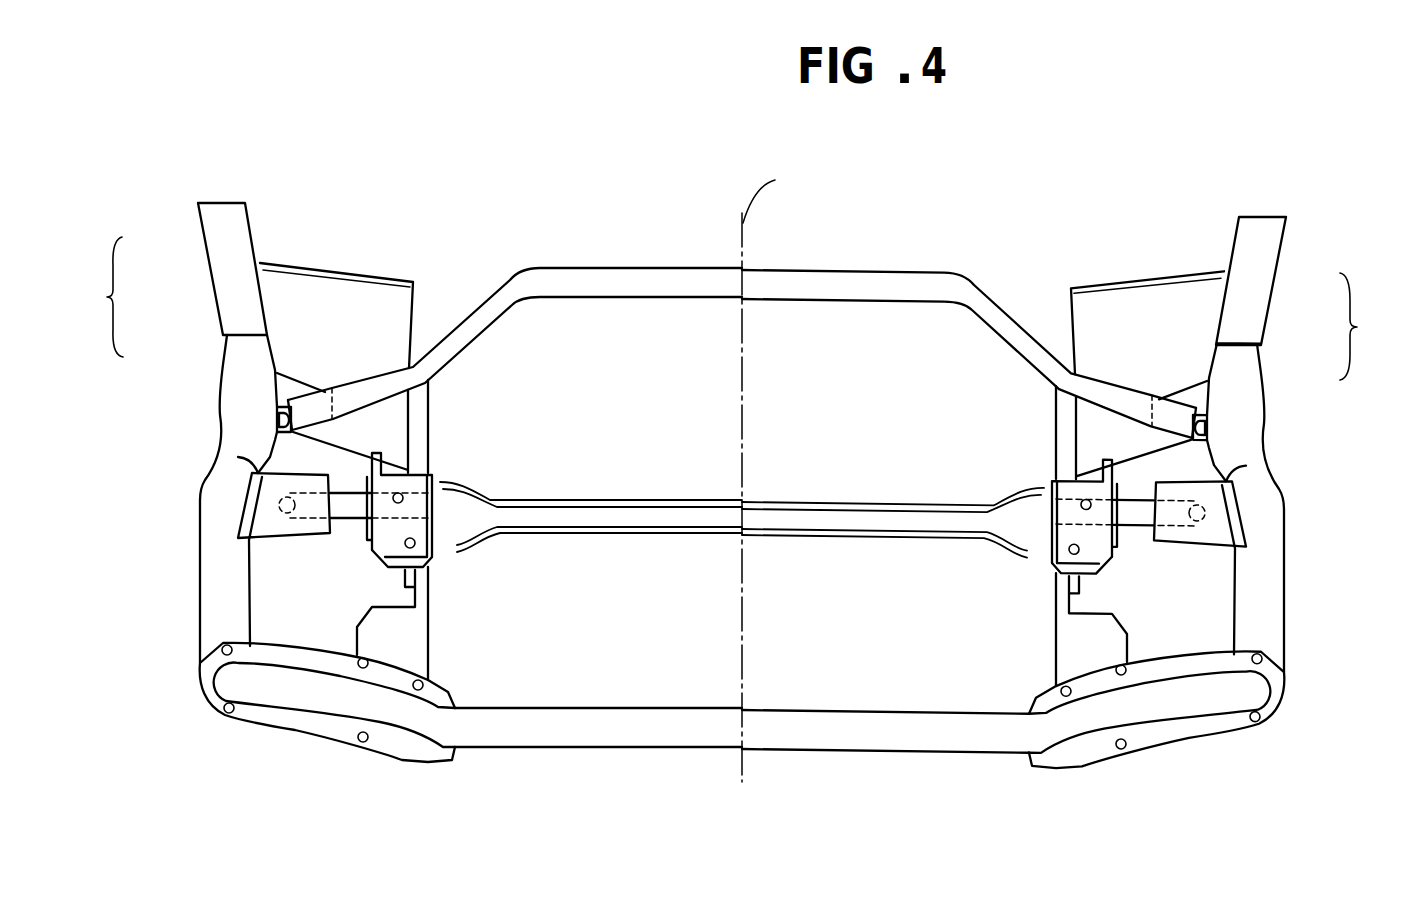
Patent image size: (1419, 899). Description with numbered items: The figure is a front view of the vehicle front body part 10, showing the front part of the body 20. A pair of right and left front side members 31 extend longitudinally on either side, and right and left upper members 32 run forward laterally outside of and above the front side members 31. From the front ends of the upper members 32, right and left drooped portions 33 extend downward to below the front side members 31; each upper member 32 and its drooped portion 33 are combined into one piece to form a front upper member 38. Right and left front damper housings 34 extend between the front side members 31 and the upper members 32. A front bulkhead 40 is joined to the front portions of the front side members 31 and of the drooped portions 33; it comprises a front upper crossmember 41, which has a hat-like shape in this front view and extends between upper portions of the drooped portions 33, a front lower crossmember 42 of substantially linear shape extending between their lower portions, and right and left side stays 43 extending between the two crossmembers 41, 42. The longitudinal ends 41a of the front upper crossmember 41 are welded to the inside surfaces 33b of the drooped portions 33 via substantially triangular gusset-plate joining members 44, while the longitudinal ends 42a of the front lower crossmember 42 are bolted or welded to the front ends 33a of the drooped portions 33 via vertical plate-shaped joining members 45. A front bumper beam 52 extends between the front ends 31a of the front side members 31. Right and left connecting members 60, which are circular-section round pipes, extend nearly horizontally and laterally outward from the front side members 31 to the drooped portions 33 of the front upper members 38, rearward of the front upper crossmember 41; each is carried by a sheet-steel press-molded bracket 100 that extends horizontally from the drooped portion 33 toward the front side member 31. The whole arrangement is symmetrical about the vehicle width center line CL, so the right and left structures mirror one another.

The front body frame structure 10 is at (578, 213).
The body 20 is at (207, 200).
The front side member 31 is at (432, 580).
The front end of front side member 31a is at (420, 530).
The upper member 32 is at (218, 258).
The drooped portion 33 is at (237, 368).
The front end of drooped portion 33a is at (213, 597).
The inside surface of drooped portion 33b is at (277, 412).
The front damper housing 34 is at (403, 295).
The front upper member 38 is at (734, 356).
The front bulkhead 40 is at (883, 267).
The front upper crossmember 41 is at (643, 273).
The longitudinal end of front upper crossmember 41a is at (367, 390).
The front lower crossmember 42 is at (672, 742).
The longitudinal end of front lower crossmember 42a is at (343, 700).
The side stay 43 is at (428, 425).
The joining member 44 is at (290, 385).
The joining member 45 is at (287, 718).
The front bumper beam 52 is at (681, 500).
The connecting member 60 is at (345, 508).
The bracket 100 is at (238, 457).